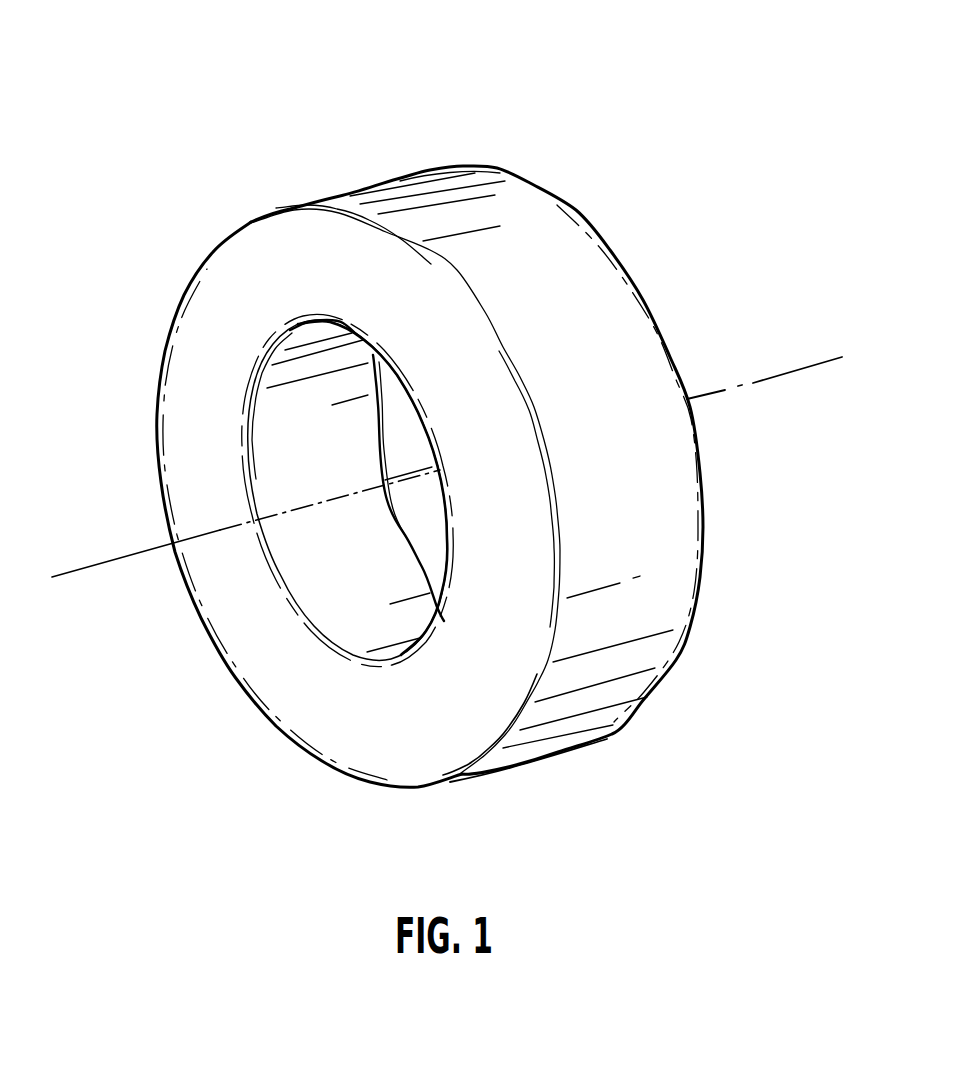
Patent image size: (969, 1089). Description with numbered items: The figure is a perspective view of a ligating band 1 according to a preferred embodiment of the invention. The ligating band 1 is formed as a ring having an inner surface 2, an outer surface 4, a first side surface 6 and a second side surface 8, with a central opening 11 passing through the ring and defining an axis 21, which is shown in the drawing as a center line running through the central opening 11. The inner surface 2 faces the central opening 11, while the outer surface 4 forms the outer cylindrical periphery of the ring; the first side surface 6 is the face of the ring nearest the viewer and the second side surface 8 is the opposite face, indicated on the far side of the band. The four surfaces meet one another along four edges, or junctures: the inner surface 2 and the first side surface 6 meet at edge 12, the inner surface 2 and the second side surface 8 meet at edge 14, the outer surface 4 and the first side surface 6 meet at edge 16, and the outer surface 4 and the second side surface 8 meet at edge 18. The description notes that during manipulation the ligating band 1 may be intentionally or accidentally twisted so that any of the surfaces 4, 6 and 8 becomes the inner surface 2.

The ligating band 1 is at (549, 94).
The inner surface 2 is at (357, 435).
The outer surface 4 is at (620, 323).
The first side surface 6 is at (187, 442).
The second side surface 8 is at (677, 462).
The central opening 11 is at (280, 482).
The edge 12 is at (336, 643).
The edge 14 is at (405, 522).
The edge 16 is at (403, 228).
The edge 18 is at (570, 210).
The axis 21 is at (97, 565).